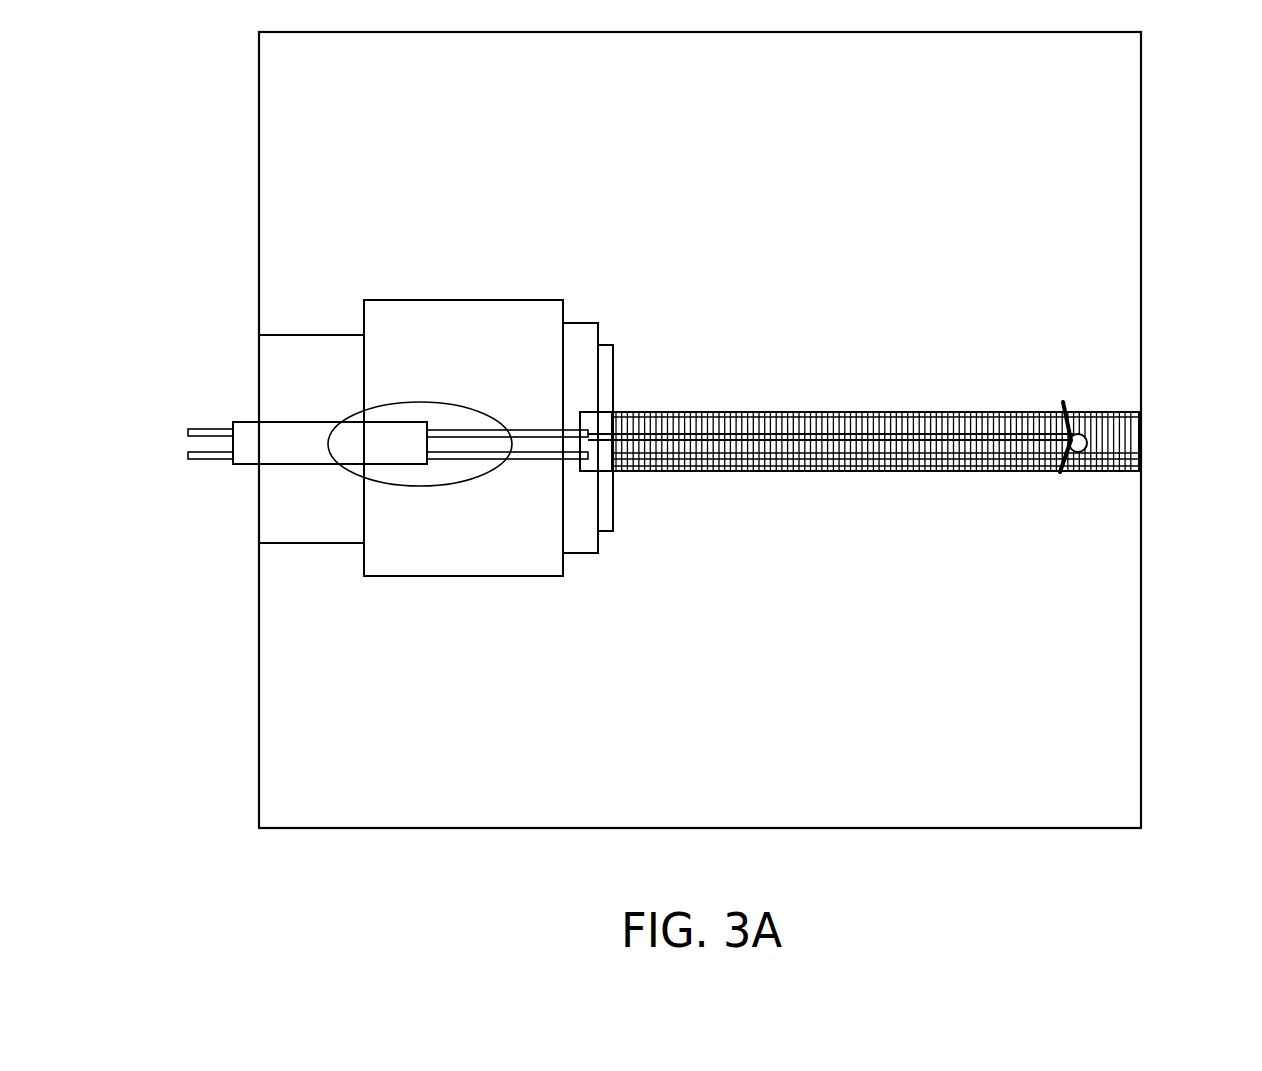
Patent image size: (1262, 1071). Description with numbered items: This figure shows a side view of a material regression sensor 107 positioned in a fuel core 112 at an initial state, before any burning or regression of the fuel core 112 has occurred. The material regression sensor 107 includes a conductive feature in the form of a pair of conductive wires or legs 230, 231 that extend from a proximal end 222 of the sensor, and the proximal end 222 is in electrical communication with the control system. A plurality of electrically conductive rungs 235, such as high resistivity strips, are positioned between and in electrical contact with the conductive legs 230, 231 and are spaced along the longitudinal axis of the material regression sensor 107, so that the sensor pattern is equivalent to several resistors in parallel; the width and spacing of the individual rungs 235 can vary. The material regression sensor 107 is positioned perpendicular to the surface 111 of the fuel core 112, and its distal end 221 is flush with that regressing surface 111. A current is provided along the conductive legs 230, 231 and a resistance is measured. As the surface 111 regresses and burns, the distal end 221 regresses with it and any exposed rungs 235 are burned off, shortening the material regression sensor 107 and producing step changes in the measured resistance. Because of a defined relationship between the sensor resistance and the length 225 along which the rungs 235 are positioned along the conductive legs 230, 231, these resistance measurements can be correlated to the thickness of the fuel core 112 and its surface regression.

The material regression sensor 107 is at (232, 282).
The surface 111 is at (1141, 263).
The fuel core 112 is at (814, 150).
The proximal end 222 is at (475, 281).
The length 225 is at (919, 527).
The conductive leg 230 is at (865, 433).
The conductive leg 231 is at (709, 452).
The electrically conductive rungs 235 is at (849, 470).
The distal end 221 is at (1141, 413).